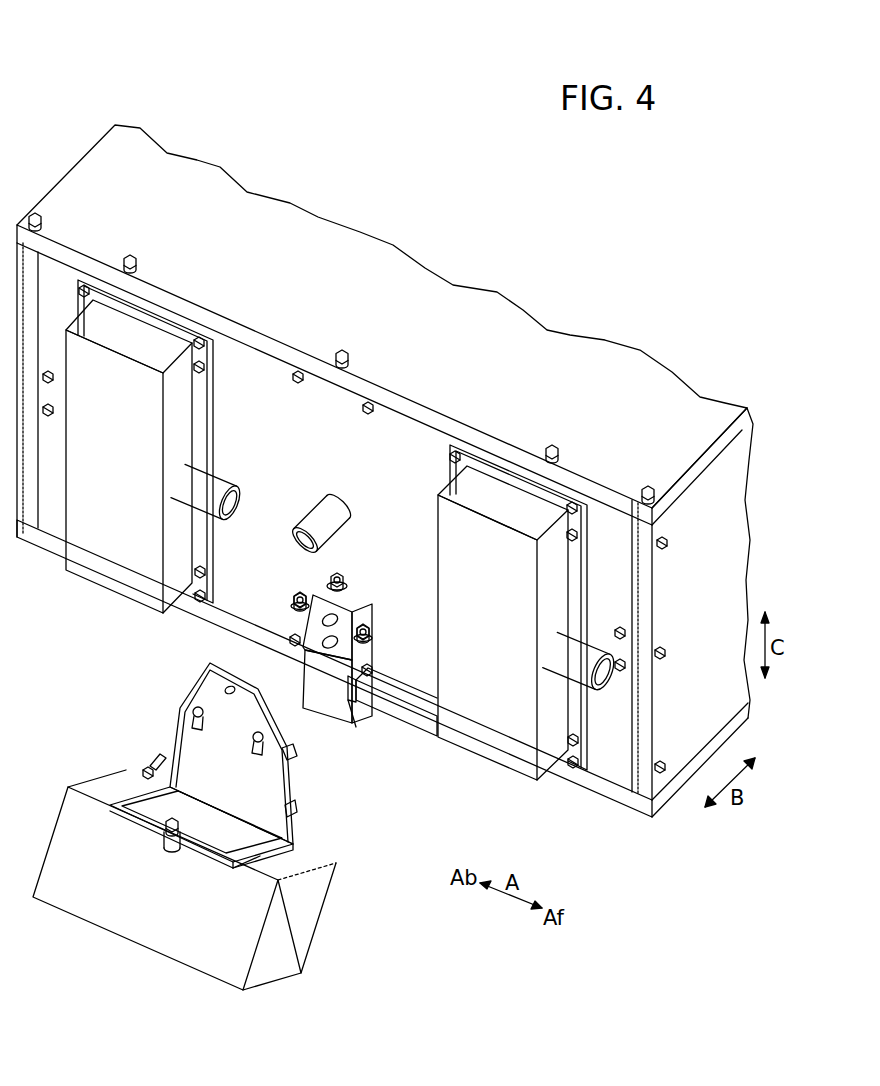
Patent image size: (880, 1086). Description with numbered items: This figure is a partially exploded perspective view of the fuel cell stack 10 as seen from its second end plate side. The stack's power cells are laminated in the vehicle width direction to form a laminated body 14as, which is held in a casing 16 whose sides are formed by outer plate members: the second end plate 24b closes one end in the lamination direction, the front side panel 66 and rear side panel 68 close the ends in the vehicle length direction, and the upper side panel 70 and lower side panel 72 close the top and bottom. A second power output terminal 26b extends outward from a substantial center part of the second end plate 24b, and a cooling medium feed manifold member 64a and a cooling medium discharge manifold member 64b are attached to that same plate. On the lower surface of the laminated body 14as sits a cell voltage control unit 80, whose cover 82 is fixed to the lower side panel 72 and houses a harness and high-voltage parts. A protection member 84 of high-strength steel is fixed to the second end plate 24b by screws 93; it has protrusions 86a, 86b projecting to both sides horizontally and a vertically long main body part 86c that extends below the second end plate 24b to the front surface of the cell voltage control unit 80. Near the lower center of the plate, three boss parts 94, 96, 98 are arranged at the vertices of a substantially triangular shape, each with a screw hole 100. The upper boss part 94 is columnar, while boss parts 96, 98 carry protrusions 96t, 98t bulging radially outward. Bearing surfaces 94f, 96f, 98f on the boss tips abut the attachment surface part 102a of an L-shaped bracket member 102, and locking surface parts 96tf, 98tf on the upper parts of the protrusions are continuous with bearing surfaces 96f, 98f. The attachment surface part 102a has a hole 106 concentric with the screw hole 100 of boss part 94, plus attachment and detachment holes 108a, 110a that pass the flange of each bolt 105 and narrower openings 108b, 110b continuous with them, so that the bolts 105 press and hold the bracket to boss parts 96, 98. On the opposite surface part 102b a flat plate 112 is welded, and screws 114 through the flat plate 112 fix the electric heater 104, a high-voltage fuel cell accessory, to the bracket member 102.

The fuel cell stack 10 is at (286, 130).
The laminated body 14as is at (600, 362).
The casing 16 is at (137, 124).
The second end plate 24b is at (606, 768).
The second power output terminal 26b is at (332, 520).
The cooling medium feed manifold member 64a is at (105, 550).
The cooling medium discharge manifold member 64b is at (478, 722).
The front side panel 66 is at (705, 492).
The rear side panel 68 is at (33, 512).
The upper side panel 70 is at (736, 418).
The lower side panel 72 is at (667, 804).
The cell voltage control unit 80 is at (392, 746).
The cover 82 is at (380, 714).
The protection member 84 is at (353, 731).
The protrusion 86a is at (257, 663).
The protrusion 86b is at (374, 660).
The main body part 86c is at (333, 706).
The screws 93 is at (328, 650).
The boss part 94 is at (371, 563).
The bearing surface 94f is at (340, 578).
The boss part 96 is at (264, 560).
The protrusion 96t is at (296, 598).
The locking surface part 96tf is at (296, 604).
The bearing surface 96f is at (292, 608).
The boss part 98 is at (431, 631).
The protrusion 98t is at (370, 626).
The locking surface part 98tf is at (372, 630).
The bearing surface 98f is at (375, 641).
The screw hole 100 is at (299, 578).
The bracket member 102 is at (203, 848).
The attachment surface part 102a is at (169, 752).
The surface part 102b is at (217, 830).
The electric heater 104 is at (317, 912).
The bolts 105 is at (135, 773).
The hole 106 is at (225, 688).
The attachment and detachment hole 108a is at (183, 728).
The opening 108b is at (190, 708).
The attachment and detachment hole 110a is at (289, 809).
The opening 110b is at (294, 763).
The flat plate 112 is at (247, 866).
The screws 114 is at (167, 850).